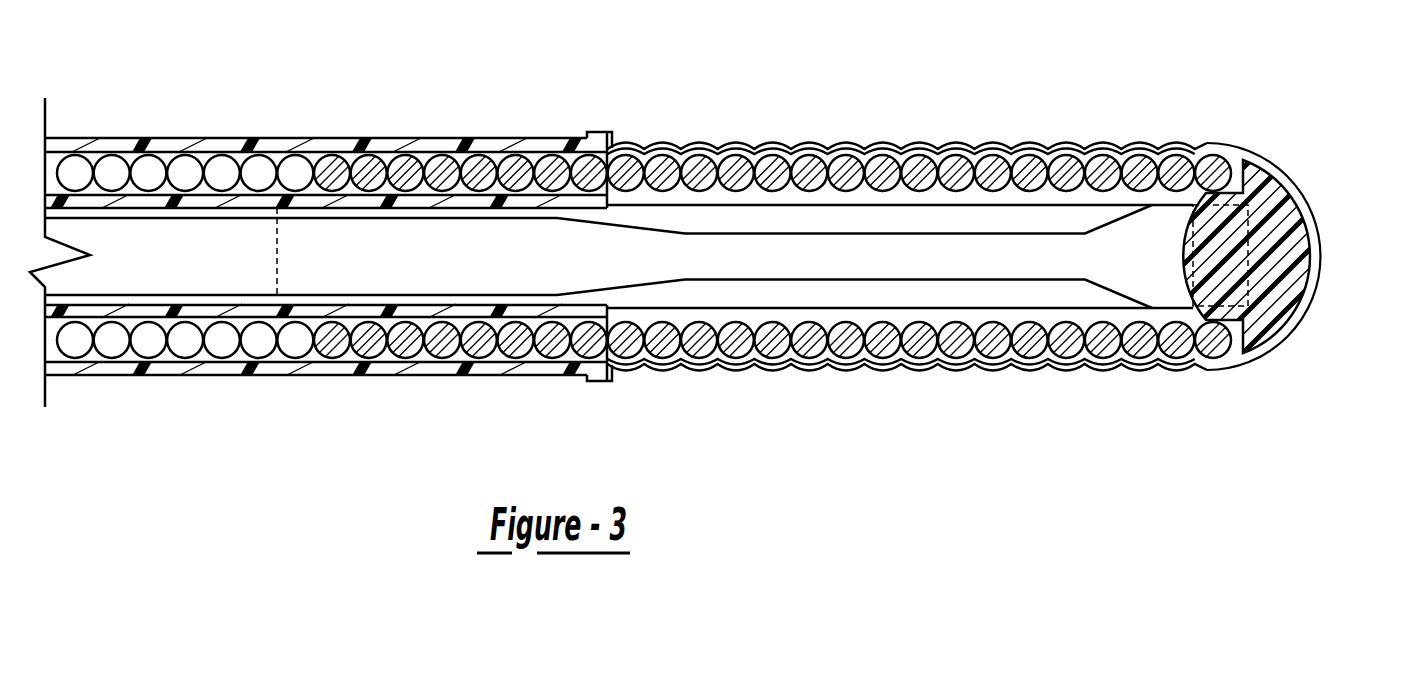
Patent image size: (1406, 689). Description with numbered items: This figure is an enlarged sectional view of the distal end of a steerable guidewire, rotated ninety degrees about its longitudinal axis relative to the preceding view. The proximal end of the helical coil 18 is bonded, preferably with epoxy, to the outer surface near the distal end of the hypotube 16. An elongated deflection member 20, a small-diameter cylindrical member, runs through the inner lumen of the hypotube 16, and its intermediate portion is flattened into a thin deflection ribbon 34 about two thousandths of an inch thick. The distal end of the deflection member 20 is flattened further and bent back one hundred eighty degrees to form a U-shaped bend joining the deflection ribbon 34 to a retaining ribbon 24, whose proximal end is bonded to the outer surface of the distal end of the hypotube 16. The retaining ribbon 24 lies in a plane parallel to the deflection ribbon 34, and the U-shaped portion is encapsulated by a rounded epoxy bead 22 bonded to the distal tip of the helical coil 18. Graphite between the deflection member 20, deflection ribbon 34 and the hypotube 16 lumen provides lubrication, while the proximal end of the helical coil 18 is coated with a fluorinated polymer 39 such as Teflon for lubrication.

The hypotube 16 is at (342, 312).
The helical coil 18 is at (885, 344).
The deflection member 20 is at (418, 255).
The epoxy bead 22 is at (1280, 269).
The retaining ribbon 24 is at (913, 220).
The deflection ribbon 34 is at (790, 260).
The fluorinated polymer 39 is at (197, 373).